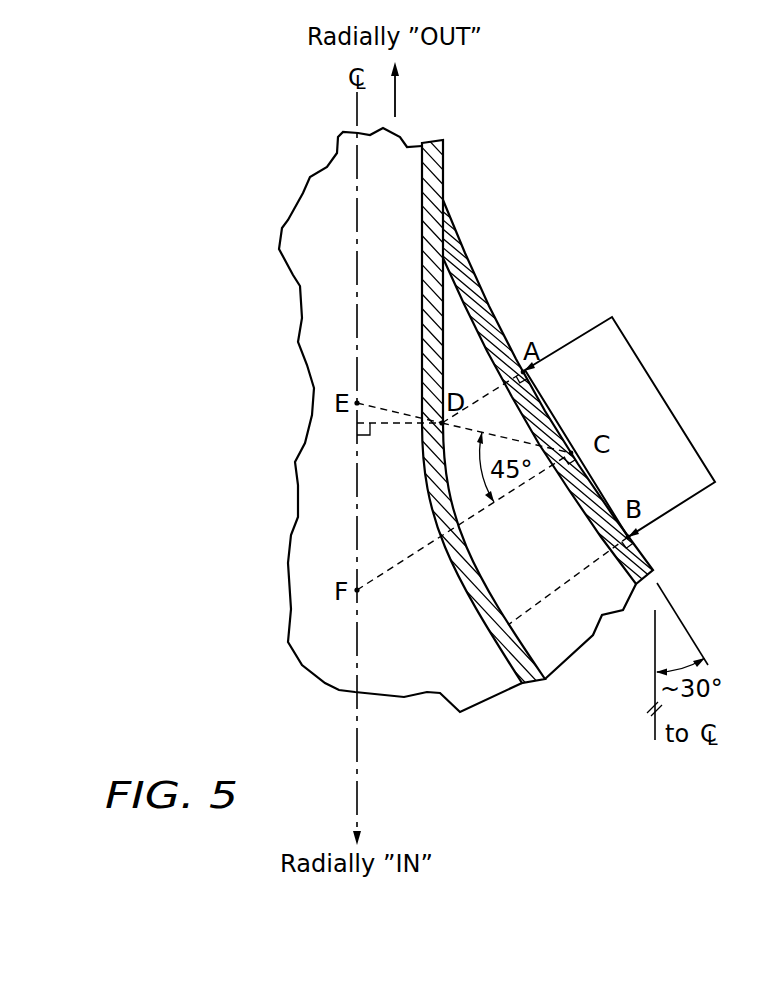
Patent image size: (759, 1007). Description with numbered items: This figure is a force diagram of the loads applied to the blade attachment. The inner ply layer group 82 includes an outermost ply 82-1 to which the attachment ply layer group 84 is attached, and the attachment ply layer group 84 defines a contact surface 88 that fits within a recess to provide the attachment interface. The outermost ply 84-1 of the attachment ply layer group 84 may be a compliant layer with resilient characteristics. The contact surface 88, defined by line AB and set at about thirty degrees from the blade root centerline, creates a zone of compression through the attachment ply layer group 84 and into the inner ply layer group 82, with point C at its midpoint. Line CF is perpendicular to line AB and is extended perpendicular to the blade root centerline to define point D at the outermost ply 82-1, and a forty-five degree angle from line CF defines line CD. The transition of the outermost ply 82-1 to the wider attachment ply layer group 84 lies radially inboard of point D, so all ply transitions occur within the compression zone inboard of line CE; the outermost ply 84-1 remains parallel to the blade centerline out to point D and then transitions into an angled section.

The inner ply layer group 82 is at (418, 118).
The outermost ply 82-1 is at (430, 165).
The attachment ply layer group 84 is at (504, 292).
The outermost ply 84-1 is at (462, 278).
The contact surface 88 is at (660, 392).